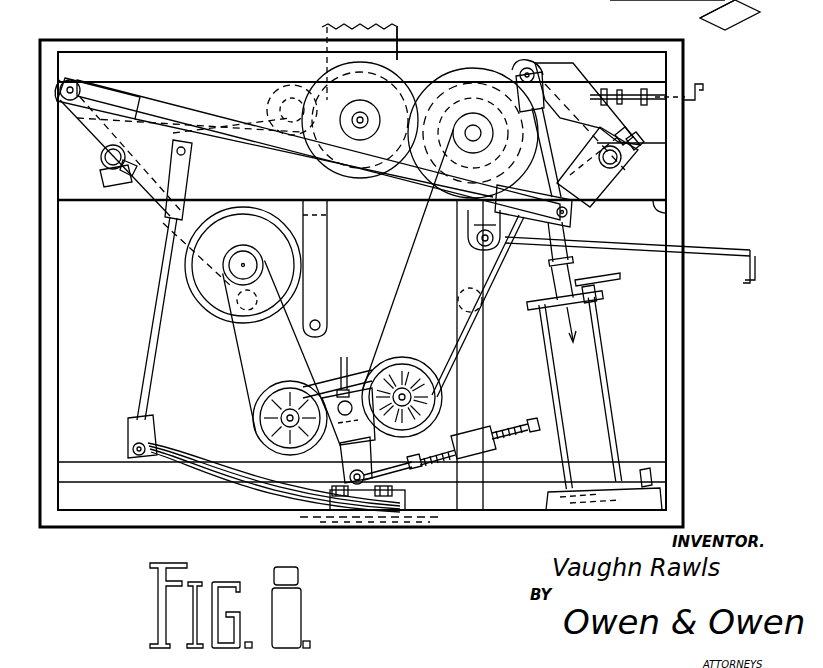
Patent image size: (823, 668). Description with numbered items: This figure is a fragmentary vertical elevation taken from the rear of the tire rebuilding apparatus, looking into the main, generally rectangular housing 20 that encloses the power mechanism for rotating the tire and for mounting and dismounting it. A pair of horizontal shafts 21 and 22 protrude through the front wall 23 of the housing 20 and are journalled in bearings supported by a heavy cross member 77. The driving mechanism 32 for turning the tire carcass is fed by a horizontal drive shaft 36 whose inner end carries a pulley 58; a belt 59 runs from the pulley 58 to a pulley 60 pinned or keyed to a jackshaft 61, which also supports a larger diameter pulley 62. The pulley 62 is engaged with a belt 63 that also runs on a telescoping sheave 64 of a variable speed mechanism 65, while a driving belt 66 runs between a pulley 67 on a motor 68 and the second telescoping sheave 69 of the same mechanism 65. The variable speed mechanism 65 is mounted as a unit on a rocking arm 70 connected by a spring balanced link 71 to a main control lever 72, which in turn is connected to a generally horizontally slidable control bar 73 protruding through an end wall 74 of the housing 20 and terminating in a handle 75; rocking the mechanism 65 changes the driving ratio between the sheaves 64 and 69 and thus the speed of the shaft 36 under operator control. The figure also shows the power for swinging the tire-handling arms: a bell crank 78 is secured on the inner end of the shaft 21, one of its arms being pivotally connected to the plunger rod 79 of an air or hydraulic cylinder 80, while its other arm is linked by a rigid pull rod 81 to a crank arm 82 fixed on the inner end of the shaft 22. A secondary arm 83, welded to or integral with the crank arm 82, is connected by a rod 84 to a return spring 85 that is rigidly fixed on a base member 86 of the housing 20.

The main housing 20 is at (686, 385).
The horizontal shaft 21 is at (626, 154).
The horizontal shaft 22 is at (92, 157).
The front wall 23 is at (620, 0).
The driving mechanism 32 is at (343, 54).
The horizontal drive shaft 36 is at (377, 110).
The pulley 58 is at (318, 77).
The belt 59 is at (420, 80).
The pulley 60 is at (524, 34).
The jackshaft 61 is at (447, 200).
The larger diameter pulley 62 is at (448, 232).
The belt 63 is at (393, 277).
The telescoping sheave 64 is at (399, 355).
The variable speed mechanism 65 is at (354, 358).
The driving belt 66 is at (242, 366).
The pulley 67 is at (263, 265).
The motor 68 is at (322, 218).
The second telescoping sheave 69 is at (253, 418).
The rocking arm 70 is at (367, 449).
The spring balanced link 71 is at (506, 428).
The main control lever 72 is at (488, 381).
The control bar 73 is at (622, 250).
The end wall 74 is at (667, 310).
The handle 75 is at (757, 268).
The cross member 77 is at (684, 210).
The bell crank 78 is at (620, 178).
The plunger rod 79 is at (570, 224).
The cylinder 80 is at (607, 368).
The pull rod 81 is at (262, 153).
The crank arm 82 is at (86, 69).
The secondary arm 83 is at (200, 168).
The rod 84 is at (156, 312).
The return spring 85 is at (174, 446).
The base member 86 is at (426, 493).